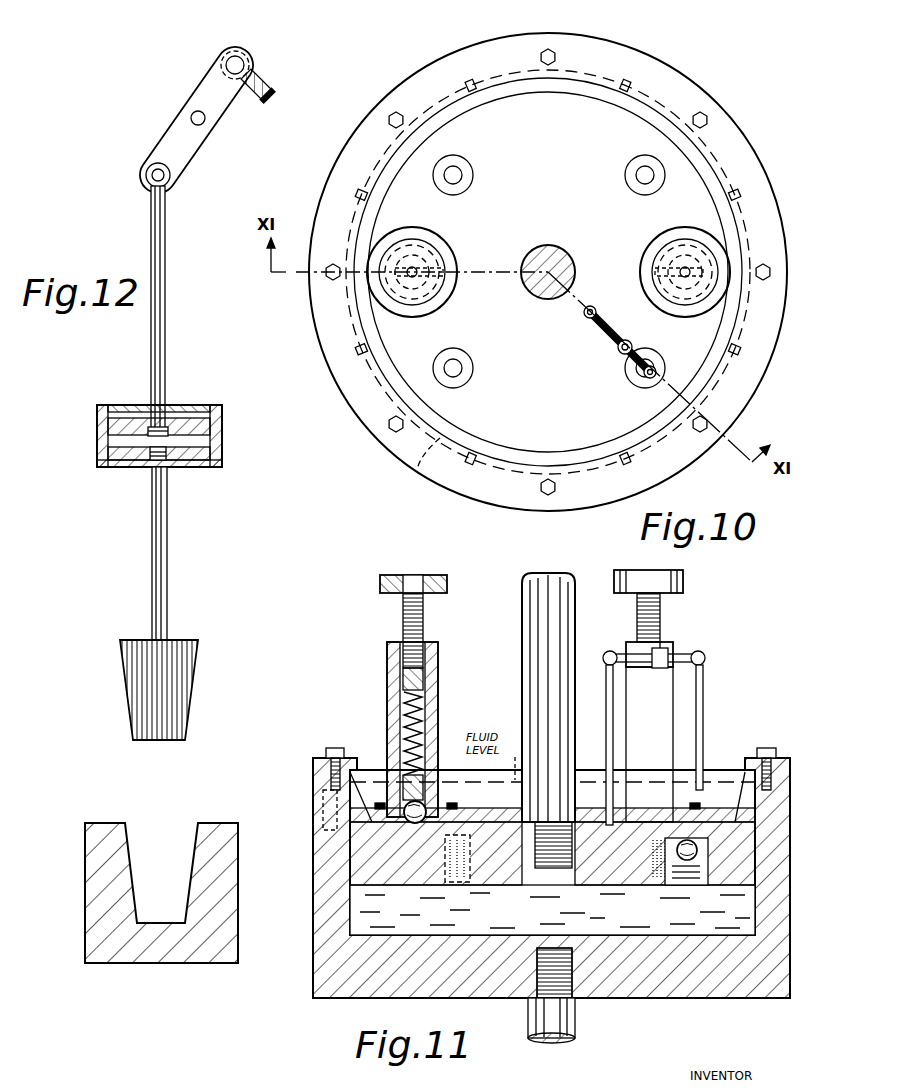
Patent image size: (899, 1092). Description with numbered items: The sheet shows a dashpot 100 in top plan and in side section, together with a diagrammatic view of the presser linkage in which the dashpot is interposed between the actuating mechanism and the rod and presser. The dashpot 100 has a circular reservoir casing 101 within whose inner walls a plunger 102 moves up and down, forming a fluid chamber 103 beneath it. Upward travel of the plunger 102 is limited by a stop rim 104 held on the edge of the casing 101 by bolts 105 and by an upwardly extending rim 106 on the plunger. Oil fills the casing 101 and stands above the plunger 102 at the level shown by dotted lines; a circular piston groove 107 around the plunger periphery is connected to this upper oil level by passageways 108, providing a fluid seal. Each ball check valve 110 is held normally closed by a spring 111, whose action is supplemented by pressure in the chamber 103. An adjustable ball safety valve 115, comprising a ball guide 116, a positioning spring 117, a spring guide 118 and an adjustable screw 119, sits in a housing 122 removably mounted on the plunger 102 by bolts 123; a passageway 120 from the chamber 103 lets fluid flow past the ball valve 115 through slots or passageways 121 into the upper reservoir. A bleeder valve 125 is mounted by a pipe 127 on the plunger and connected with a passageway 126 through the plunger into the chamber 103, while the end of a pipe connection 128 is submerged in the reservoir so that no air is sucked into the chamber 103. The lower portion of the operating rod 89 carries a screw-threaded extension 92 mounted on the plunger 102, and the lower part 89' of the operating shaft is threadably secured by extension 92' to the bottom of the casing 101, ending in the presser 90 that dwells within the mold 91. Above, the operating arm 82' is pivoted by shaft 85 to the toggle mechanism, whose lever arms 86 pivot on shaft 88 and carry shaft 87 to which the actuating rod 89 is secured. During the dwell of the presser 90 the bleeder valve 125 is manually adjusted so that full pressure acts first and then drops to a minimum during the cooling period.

In FIG. 12, the operating arm second part 82' is at (279, 60).
In FIG. 12, the shaft 85 is at (255, 38).
In FIG. 12, the lever arms 86 is at (200, 82).
In FIG. 12, the shaft 87 is at (155, 173).
In FIG. 12, the shaft 88 is at (204, 122).
In FIG. 10, the presser actuating rod 89 is at (566, 269).
In FIG. 11, the presser actuating rod 89 is at (548, 681).
In FIG. 12, the presser actuating rod 89 is at (198, 307).
In FIG. 11, the lower part of operating shaft 89' is at (573, 1020).
In FIG. 12, the lower part of operating shaft 89' is at (205, 553).
In FIG. 12, the presser 90 is at (195, 650).
In FIG. 12, the mold 91 is at (128, 965).
In FIG. 10, the screw-threaded extension portion 92 is at (548, 262).
In FIG. 11, the screw-threaded extension portion 92 is at (568, 790).
In FIG. 12, the screw-threaded extension portion 92 is at (198, 394).
In FIG. 11, the extension 92' is at (530, 986).
In FIG. 12, the extension 92' is at (204, 475).
In FIG. 10, the dashpot 100 is at (667, 40).
In FIG. 11, the dashpot 100 is at (318, 990).
In FIG. 12, the dashpot 100 is at (262, 444).
In FIG. 11, the reservoir casing 101 is at (340, 958).
In FIG. 10, the plunger 102 is at (410, 180).
In FIG. 11, the plunger 102 is at (350, 866).
In FIG. 12, the plunger 102 is at (108, 432).
In FIG. 11, the fluid chamber 103 is at (350, 925).
In FIG. 10, the stop rim 104 is at (452, 468).
In FIG. 11, the stop rim 104 is at (772, 778).
In FIG. 12, the stop rim 104 is at (100, 408).
In FIG. 10, the bolts 105 is at (697, 430).
In FIG. 11, the bolts 105 is at (330, 752).
In FIG. 10, the upwardly extending rim 106 is at (525, 462).
In FIG. 11, the upwardly extending rim 106 is at (740, 790).
In FIG. 10, the circular piston groove 107 is at (417, 470).
In FIG. 11, the circular piston groove 107 is at (400, 845).
In FIG. 10, the passageways 108 is at (612, 98).
In FIG. 11, the passageways 108 is at (324, 802).
In FIG. 10, the ball check valve 110 is at (456, 172).
In FIG. 11, the ball check valve 110 is at (708, 845).
In FIG. 11, the spring 111 is at (700, 862).
In FIG. 11, the ball valve 115 is at (428, 800).
In FIG. 11, the ball guide 116 is at (428, 780).
In FIG. 11, the positioning spring 117 is at (428, 700).
In FIG. 11, the spring guide 118 is at (428, 680).
In FIG. 11, the adjustable screw 119 is at (430, 605).
In FIG. 11, the passageway 120 is at (445, 858).
In FIG. 10, the slots or passageways 121 is at (436, 282).
In FIG. 11, the slots or passageways 121 is at (350, 818).
In FIG. 10, the housing 122 is at (432, 258).
In FIG. 11, the housing 122 is at (387, 660).
In FIG. 11, the bolts 123 is at (378, 803).
In FIG. 10, the bleeder valve 125 is at (620, 350).
In FIG. 11, the bleeder valve 125 is at (650, 630).
In FIG. 11, the passageway 126 is at (650, 840).
In FIG. 10, the pipe 127 is at (584, 313).
In FIG. 11, the pipe 127 is at (614, 698).
In FIG. 10, the pipe connection 128 is at (649, 379).
In FIG. 11, the pipe connection 128 is at (704, 690).